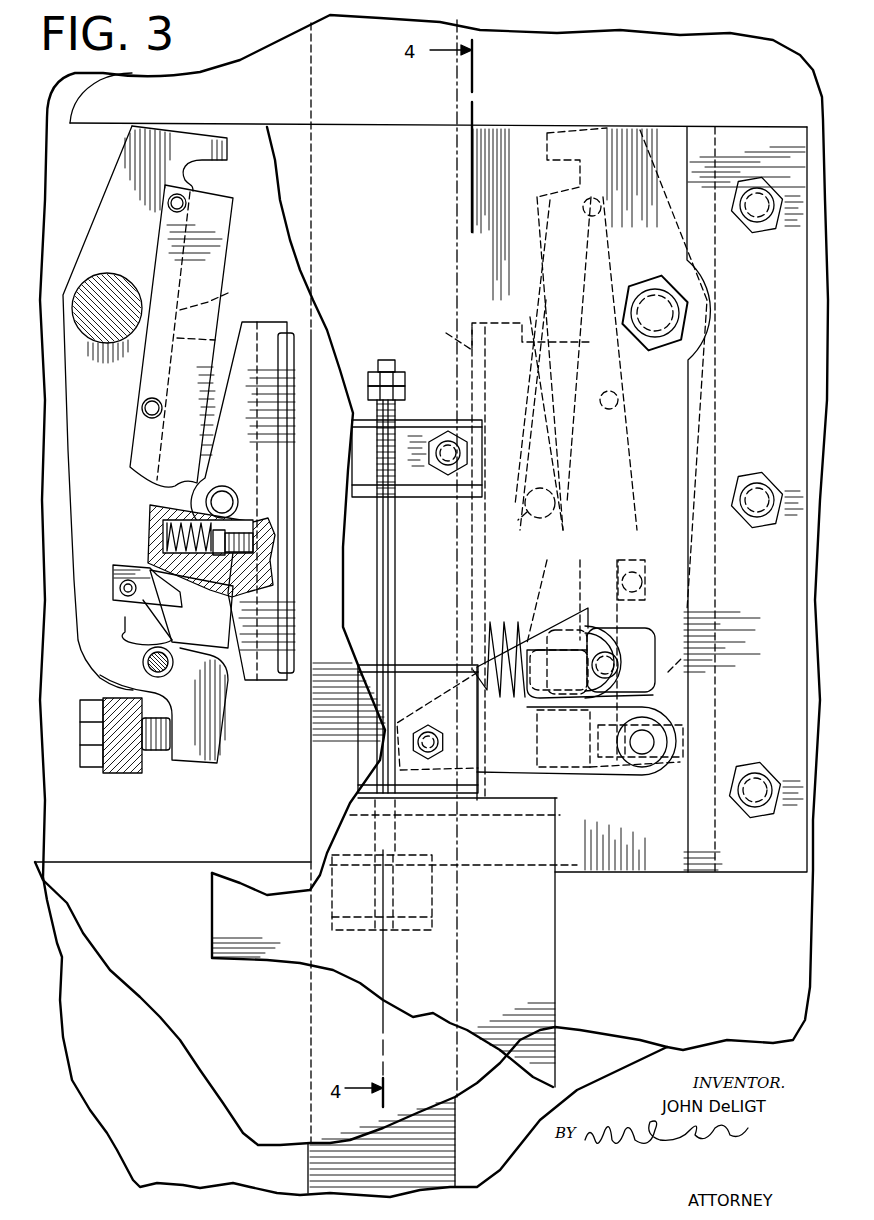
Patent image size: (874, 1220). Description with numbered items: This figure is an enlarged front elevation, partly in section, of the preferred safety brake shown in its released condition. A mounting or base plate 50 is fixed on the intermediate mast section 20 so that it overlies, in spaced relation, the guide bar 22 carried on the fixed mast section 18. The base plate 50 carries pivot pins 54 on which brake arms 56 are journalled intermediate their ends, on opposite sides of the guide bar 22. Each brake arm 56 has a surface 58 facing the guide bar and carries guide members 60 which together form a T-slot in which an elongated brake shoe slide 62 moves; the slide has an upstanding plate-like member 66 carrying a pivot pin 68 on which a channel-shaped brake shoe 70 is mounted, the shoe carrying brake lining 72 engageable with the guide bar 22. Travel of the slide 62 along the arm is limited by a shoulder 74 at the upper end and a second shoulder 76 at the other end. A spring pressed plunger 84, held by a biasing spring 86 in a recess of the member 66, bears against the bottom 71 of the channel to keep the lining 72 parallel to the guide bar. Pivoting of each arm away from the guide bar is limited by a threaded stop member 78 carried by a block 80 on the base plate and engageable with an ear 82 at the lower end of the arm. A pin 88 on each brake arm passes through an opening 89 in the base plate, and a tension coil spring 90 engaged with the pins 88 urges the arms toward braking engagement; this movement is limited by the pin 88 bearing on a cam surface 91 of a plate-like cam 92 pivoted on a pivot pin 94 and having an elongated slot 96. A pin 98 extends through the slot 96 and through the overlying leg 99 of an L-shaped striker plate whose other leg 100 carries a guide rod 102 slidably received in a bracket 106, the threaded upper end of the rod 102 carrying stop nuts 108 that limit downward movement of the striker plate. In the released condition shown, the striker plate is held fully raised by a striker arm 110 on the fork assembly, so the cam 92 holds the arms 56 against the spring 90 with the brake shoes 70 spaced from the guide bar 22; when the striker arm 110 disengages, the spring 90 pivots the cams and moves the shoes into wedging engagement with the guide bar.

The first base plate 18 is at (78, 168).
The intermediate mast section 20 is at (680, 84).
The guide bar 22 is at (311, 75).
The mounting plate 50 is at (519, 130).
The pivot pins 54 is at (112, 300).
The brake arms 56 is at (108, 456).
The surface 58 is at (215, 310).
The guide members 60 is at (218, 260).
The brake shoe slide 62 is at (546, 308).
The plate-like member 66 is at (211, 638).
The pivot pin 68 is at (222, 495).
The brake shoe 70 is at (268, 330).
The bottom 71 is at (262, 570).
The brake lining 72 is at (288, 340).
The shoulder 74 is at (218, 166).
The second shoulder 76 is at (183, 648).
The stop member 78 is at (148, 758).
The block 80 is at (110, 762).
The ear 82 is at (193, 765).
The spring pressed plunger 84 is at (218, 562).
The biasing spring 86 is at (165, 533).
The pin 88 is at (143, 660).
The opening 89 is at (652, 686).
The tension coil spring 90 is at (518, 628).
The cam surface 91 is at (590, 668).
The cam 92 is at (516, 736).
The pivot pins 94 is at (652, 740).
The elongated slots 96 is at (395, 745).
The pin 98 is at (427, 726).
The leg 99 is at (432, 677).
The leg 100 is at (483, 800).
The guide rod 102 is at (398, 570).
The bracket 106 is at (422, 490).
The stop nuts 108 is at (396, 376).
The striker arm 110 is at (545, 918).